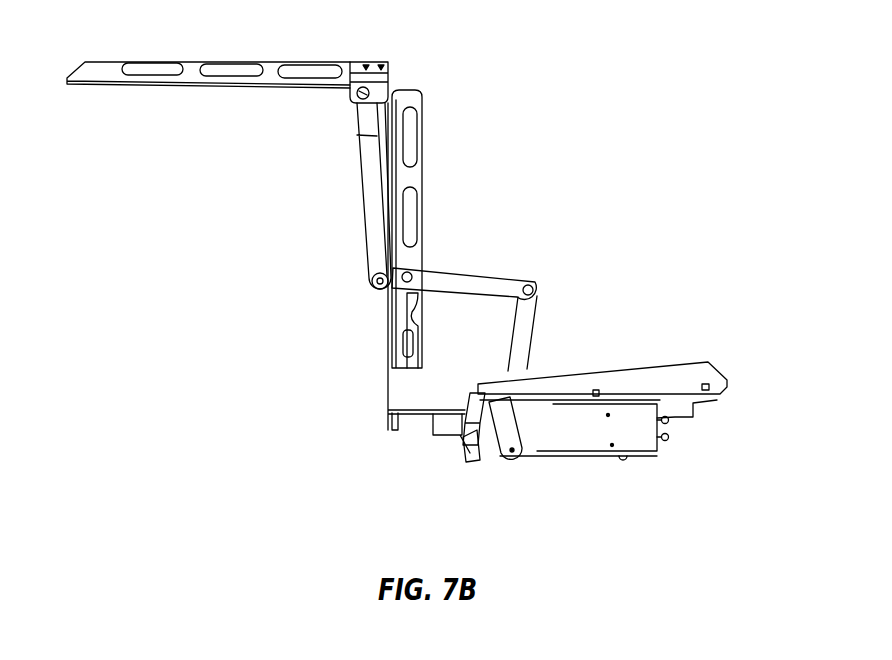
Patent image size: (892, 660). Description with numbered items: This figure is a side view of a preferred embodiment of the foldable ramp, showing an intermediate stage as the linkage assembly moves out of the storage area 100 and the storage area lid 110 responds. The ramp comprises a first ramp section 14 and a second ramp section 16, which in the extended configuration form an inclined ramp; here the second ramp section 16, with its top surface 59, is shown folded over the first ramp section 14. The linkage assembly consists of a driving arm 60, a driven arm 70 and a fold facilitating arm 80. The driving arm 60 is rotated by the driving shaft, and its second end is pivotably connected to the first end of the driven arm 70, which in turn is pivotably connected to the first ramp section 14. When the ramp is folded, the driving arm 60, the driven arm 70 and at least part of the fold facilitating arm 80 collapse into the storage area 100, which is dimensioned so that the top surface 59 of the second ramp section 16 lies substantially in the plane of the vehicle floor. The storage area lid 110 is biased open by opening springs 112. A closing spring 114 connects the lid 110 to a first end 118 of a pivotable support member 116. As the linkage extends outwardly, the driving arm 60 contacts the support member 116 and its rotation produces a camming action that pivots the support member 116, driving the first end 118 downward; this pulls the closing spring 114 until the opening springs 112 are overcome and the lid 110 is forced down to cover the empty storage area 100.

The first ramp section 14 is at (422, 162).
The second ramp section 16 is at (305, 88).
The top surface 59 is at (195, 80).
The driving arm 60 is at (525, 340).
The driven arm 70 is at (468, 277).
The fold facilitating arm 80 is at (367, 212).
The storage area 100 is at (635, 437).
The storage area lid 110 is at (690, 372).
The opening springs 112 is at (708, 392).
The closing spring 114 is at (462, 437).
The pivotable support member 116 is at (498, 447).
The first end of support member 118 is at (470, 450).